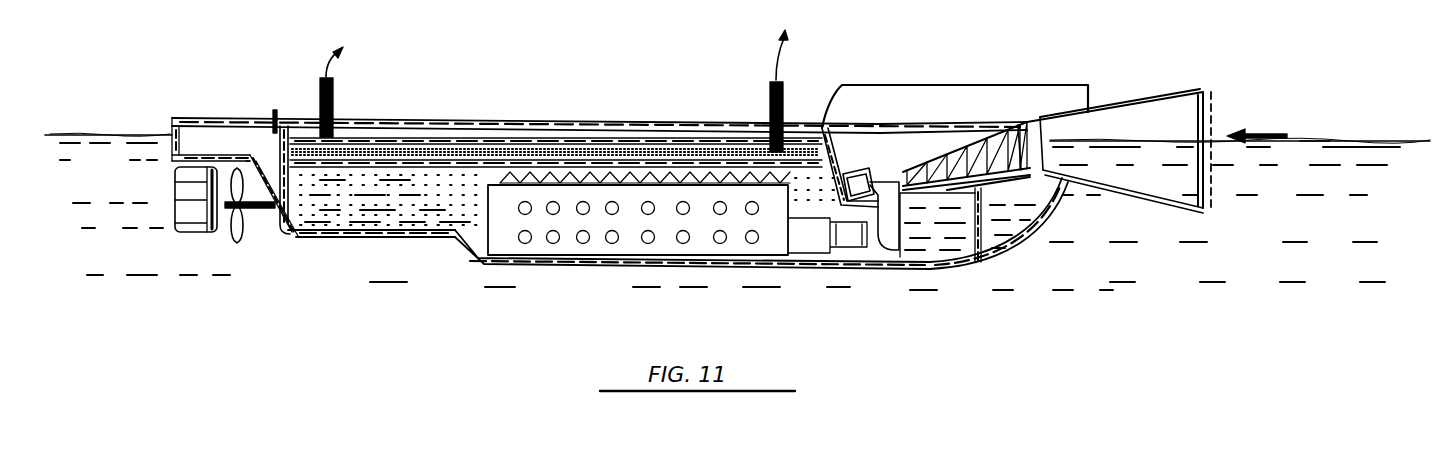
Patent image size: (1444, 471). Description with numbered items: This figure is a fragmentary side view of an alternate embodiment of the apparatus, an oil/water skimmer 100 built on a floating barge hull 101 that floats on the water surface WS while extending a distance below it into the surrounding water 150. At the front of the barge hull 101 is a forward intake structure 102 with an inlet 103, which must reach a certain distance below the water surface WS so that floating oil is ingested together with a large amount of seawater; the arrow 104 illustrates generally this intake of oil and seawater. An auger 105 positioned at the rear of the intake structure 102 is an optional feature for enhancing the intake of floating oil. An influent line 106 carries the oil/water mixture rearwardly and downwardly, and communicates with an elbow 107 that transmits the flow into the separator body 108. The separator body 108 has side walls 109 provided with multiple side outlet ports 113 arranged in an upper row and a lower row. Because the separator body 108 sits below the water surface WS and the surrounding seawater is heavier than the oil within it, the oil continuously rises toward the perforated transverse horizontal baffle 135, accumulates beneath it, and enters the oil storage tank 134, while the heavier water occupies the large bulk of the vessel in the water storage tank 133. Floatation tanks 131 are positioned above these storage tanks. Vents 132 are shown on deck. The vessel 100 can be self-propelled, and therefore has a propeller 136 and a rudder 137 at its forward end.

The oil/water skimmer 100 is at (488, 60).
The barge hull 101 is at (477, 265).
The forward intake structure 102 is at (1192, 93).
The inlet 103 is at (1218, 100).
The arrow 104 is at (1267, 130).
The auger 105 is at (1010, 127).
The influent line 106 is at (900, 150).
The elbow 107 is at (880, 235).
The separator body 108 is at (632, 240).
The side walls 109 is at (545, 240).
The side outlet ports 113 is at (748, 242).
The floatation tanks 131 is at (470, 135).
The exhaust masts 132 is at (335, 97).
The water storage tank 133 is at (370, 215).
The oil storage tank 134 is at (302, 122).
The transverse horizontal baffle 135 is at (293, 238).
The propeller 136 is at (230, 232).
The rudder 137 is at (173, 183).
The water 150 is at (1345, 233).
The water surface WS is at (1331, 140).